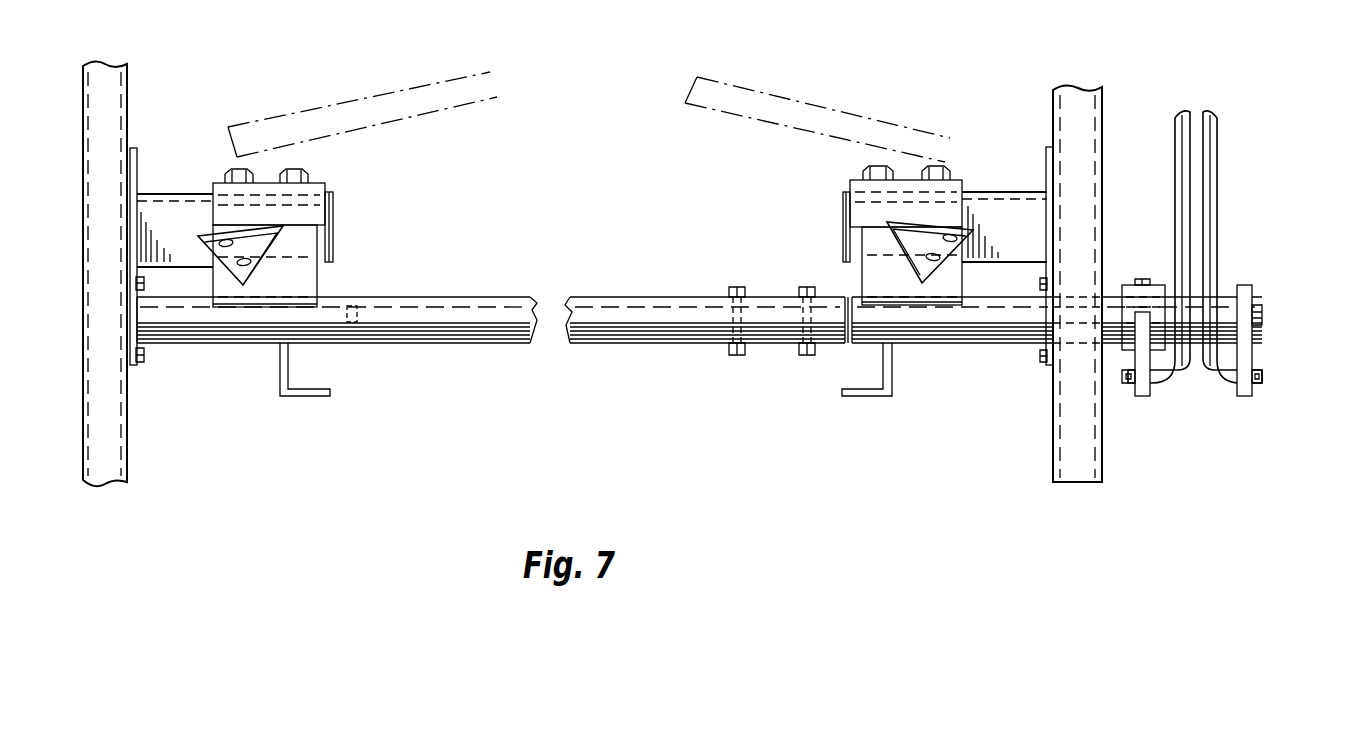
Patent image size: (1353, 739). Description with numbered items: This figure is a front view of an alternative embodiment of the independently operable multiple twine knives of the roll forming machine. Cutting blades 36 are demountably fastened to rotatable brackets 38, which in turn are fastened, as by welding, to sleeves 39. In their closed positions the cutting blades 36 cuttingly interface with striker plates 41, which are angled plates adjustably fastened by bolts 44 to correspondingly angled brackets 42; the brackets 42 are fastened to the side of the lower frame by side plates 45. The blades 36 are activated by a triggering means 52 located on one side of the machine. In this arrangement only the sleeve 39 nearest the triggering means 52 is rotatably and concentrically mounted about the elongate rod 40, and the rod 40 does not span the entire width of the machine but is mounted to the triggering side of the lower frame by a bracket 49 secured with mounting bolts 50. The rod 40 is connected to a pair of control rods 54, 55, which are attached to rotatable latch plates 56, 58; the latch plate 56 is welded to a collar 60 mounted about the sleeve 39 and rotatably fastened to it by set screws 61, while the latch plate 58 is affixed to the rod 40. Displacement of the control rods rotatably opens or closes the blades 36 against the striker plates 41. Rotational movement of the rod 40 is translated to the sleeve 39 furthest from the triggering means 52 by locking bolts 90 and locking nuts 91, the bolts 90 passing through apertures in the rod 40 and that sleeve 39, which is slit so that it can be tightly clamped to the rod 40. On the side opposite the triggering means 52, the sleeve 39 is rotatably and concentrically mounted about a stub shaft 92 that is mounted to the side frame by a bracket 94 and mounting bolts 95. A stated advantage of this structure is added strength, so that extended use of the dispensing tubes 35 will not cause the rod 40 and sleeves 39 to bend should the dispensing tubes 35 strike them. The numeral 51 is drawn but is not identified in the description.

The dispensing tubes 35 is at (455, 73).
The cutting blades 36 is at (285, 229).
The brackets 38 is at (317, 280).
The sleeves 39 is at (485, 343).
The elongate rod 40 is at (912, 343).
The striker plates 41 is at (325, 185).
The brackets 42 is at (150, 194).
The bolts 44 is at (240, 169).
The side plates 45 is at (136, 150).
The bracket 49 is at (1053, 370).
The mounting bolts 50 is at (1040, 283).
The angle bracket 51 is at (312, 398).
The triggering means 52 is at (1262, 291).
The control rod 54 is at (1175, 118).
The control rod 55 is at (1210, 118).
The latch plate 56 is at (1142, 397).
The latch plate 58 is at (1245, 397).
The collar 60 is at (1165, 285).
The set screws 61 is at (1143, 280).
The locking bolts 90 is at (805, 287).
The locking nuts 91 is at (770, 372).
The stub shaft 92 is at (352, 322).
The bracket 94 is at (133, 368).
The mounting bolts 95 is at (145, 283).